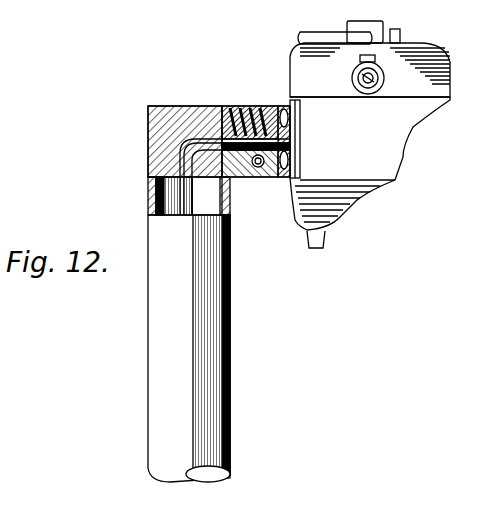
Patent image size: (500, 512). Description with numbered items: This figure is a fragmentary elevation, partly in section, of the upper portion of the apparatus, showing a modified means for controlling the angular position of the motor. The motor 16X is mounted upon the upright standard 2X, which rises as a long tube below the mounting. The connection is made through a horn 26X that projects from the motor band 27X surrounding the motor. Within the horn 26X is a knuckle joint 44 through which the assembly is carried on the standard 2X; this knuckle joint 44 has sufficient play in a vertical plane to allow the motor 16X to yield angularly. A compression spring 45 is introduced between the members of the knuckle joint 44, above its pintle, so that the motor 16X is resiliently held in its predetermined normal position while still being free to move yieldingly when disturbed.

The standard 2X is at (160, 333).
The motor 16X is at (430, 50).
The horn 26X is at (207, 118).
The motor band 27X is at (370, 172).
The knuckle joint 44 is at (258, 167).
The compression spring 45 is at (245, 107).